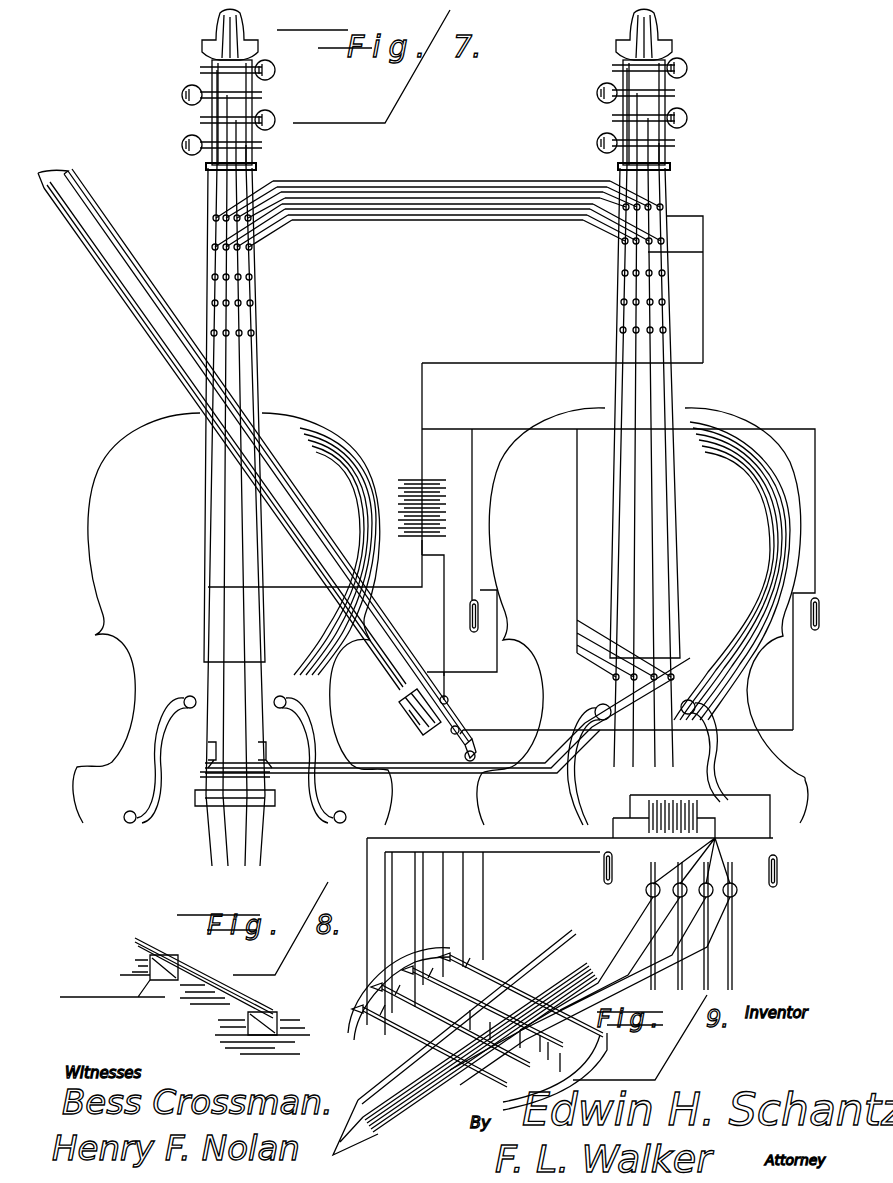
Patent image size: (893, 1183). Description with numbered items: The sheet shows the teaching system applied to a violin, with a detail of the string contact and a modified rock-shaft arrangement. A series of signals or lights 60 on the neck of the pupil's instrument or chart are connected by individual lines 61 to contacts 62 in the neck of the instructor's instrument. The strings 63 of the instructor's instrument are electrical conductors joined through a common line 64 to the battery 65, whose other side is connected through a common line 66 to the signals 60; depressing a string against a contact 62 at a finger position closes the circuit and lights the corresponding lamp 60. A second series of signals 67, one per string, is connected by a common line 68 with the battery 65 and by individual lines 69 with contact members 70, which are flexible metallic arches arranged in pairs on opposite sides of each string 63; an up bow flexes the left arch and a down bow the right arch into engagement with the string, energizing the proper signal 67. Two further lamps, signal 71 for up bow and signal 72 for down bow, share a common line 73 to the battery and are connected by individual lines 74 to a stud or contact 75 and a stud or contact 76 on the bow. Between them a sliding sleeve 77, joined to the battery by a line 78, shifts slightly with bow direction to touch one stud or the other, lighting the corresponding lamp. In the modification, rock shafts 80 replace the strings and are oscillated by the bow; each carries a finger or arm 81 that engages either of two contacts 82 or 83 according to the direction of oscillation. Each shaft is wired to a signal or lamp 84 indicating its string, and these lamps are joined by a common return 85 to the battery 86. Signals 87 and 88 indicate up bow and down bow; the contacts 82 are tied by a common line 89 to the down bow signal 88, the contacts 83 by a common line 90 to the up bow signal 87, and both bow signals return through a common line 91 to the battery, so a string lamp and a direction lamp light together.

In FIG. 7, the signals or lights 60 is at (662, 207).
In FIG. 7, the individual lines 61 is at (457, 190).
In FIG. 7, the contacts 62 is at (212, 246).
In FIG. 7, the strings 63 is at (250, 370).
In FIG. 8, the strings 63 is at (160, 930).
In FIG. 7, the common line 64 is at (310, 588).
In FIG. 7, the battery 65 is at (420, 480).
In FIG. 7, the common line 66 is at (551, 362).
In FIG. 7, the signals or lamps 67 is at (672, 670).
In FIG. 7, the common line 68 is at (577, 535).
In FIG. 7, the individual lines 69 is at (467, 776).
In FIG. 8, the individual lines 69 is at (120, 976).
In FIG. 7, the contact members 70 is at (208, 754).
In FIG. 8, the contact members 70 is at (220, 985).
In FIG. 7, the signal 71 is at (470, 628).
In FIG. 7, the signal 72 is at (816, 630).
In FIG. 7, the common line 73 is at (451, 432).
In FIG. 7, the individual lines 74 is at (487, 681).
In FIG. 7, the stud or contact 75 is at (440, 670).
In FIG. 7, the stud or contact 76 is at (462, 730).
In FIG. 7, the sliding sleeve 77 is at (452, 706).
In FIG. 7, the line 78 is at (444, 612).
In FIG. 9, the rock shafts 80 is at (500, 976).
In FIG. 9, the finger or arm 81 is at (470, 975).
In FIG. 9, the contacts 82 is at (370, 1043).
In FIG. 9, the contacts 83 is at (387, 1030).
In FIG. 9, the signal or lamp 84 is at (736, 895).
In FIG. 9, the common return 85 is at (712, 822).
In FIG. 9, the battery 86 is at (678, 802).
In FIG. 9, the signal 87 is at (595, 874).
In FIG. 9, the signal 88 is at (792, 871).
In FIG. 9, the common line 89 is at (550, 840).
In FIG. 9, the common line 90 is at (553, 850).
In FIG. 9, the common line 91 is at (700, 806).